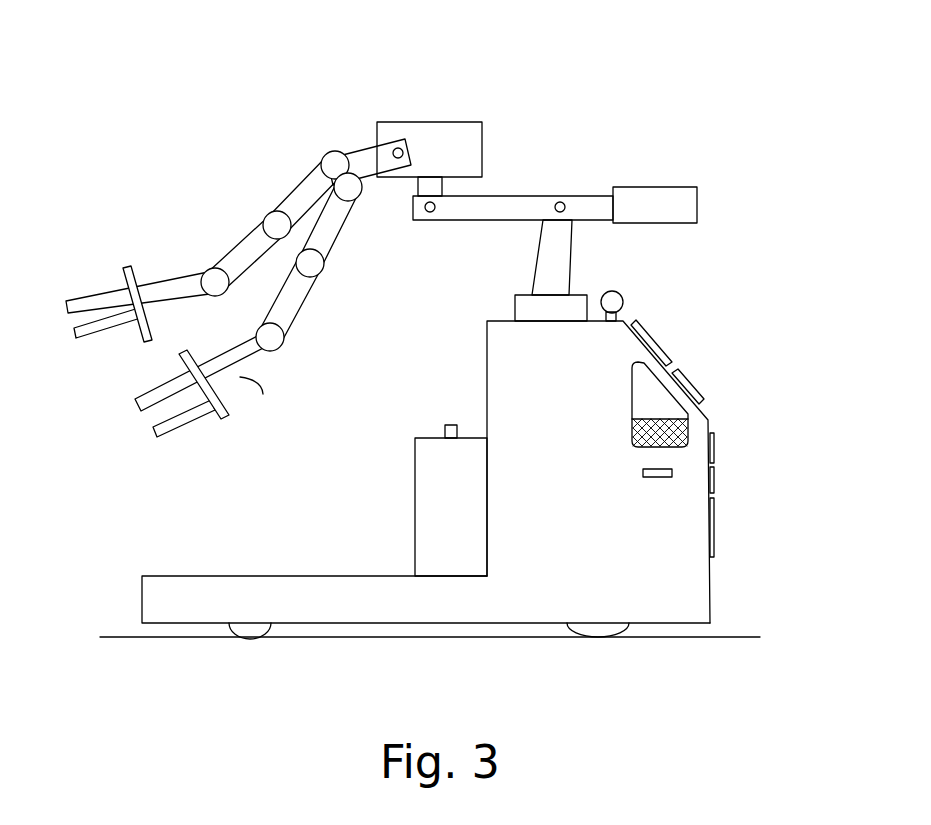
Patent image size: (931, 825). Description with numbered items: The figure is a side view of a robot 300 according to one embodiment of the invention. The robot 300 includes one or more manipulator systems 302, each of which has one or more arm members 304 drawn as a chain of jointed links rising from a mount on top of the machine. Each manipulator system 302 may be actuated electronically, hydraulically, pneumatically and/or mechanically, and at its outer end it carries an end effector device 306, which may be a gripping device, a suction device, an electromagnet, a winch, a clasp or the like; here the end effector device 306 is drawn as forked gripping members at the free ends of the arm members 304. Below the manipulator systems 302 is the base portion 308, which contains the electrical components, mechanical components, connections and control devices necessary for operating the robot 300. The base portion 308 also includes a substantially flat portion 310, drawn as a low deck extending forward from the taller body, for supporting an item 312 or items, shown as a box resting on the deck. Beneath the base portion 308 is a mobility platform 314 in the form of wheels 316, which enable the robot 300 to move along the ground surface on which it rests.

The robot 300 is at (190, 121).
The manipulator system 302 is at (303, 322).
The arm member 304 is at (303, 303).
The end effector device 306 is at (135, 382).
The base portion 308 is at (712, 583).
The substantially flat portion 310 is at (313, 576).
The item 312 is at (470, 521).
The mobility platform 314 is at (640, 645).
The wheels 316 is at (250, 641).